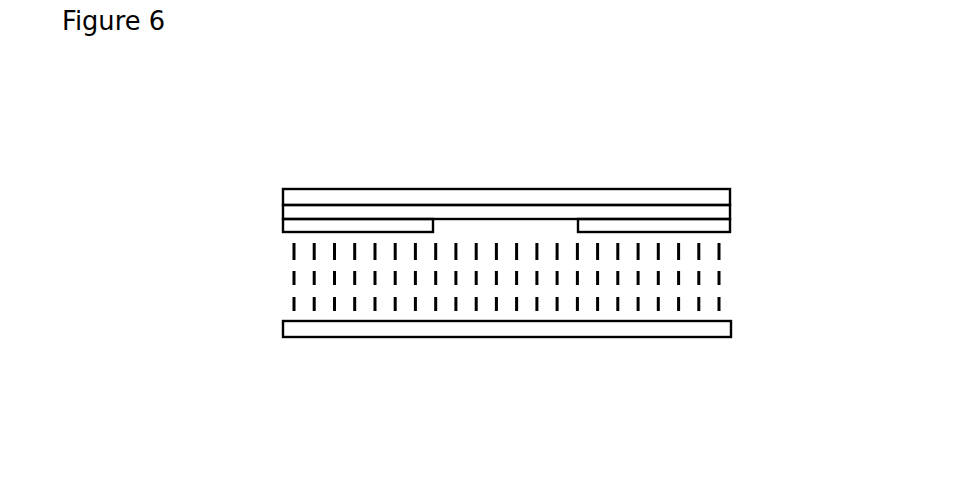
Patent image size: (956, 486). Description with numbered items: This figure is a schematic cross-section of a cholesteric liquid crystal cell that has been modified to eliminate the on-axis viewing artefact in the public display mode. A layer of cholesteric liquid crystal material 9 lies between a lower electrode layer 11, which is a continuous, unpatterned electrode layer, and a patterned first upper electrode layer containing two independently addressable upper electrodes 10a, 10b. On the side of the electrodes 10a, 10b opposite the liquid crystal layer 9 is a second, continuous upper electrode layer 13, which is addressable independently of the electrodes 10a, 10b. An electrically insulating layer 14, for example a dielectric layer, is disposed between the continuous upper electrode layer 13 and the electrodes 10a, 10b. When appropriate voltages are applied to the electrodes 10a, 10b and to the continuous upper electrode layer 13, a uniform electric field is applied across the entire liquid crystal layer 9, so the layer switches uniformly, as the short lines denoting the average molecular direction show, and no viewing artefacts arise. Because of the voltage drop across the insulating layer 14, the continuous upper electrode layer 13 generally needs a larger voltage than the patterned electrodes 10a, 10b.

The continuous upper electrode layer 13 is at (657, 189).
The electrically insulating layer 14 is at (723, 210).
The upper electrode 10a is at (723, 226).
The upper electrode 10b is at (283, 224).
The cholesteric liquid crystal material layer 9 is at (726, 277).
The lower electrode layer 11 is at (653, 337).